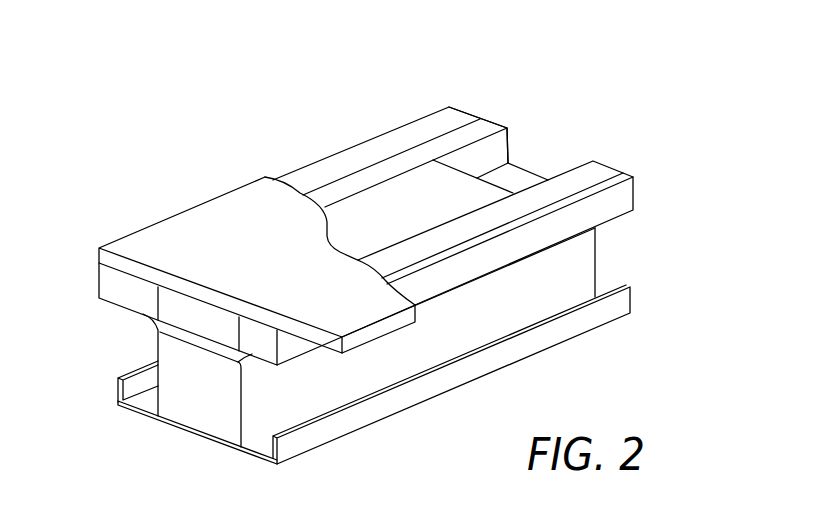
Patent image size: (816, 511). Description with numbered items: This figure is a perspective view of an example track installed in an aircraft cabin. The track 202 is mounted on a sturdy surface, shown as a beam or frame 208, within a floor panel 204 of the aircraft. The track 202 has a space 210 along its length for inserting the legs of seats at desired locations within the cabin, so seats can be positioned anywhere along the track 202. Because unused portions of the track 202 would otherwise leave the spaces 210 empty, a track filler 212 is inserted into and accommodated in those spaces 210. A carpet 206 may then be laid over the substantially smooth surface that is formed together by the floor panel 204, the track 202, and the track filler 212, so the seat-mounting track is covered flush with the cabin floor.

The track 202 is at (495, 125).
The floor panel 204 is at (388, 142).
The carpet 206 is at (167, 243).
The frame 208 is at (275, 400).
The space 210 is at (522, 182).
The track filler 212 is at (355, 232).